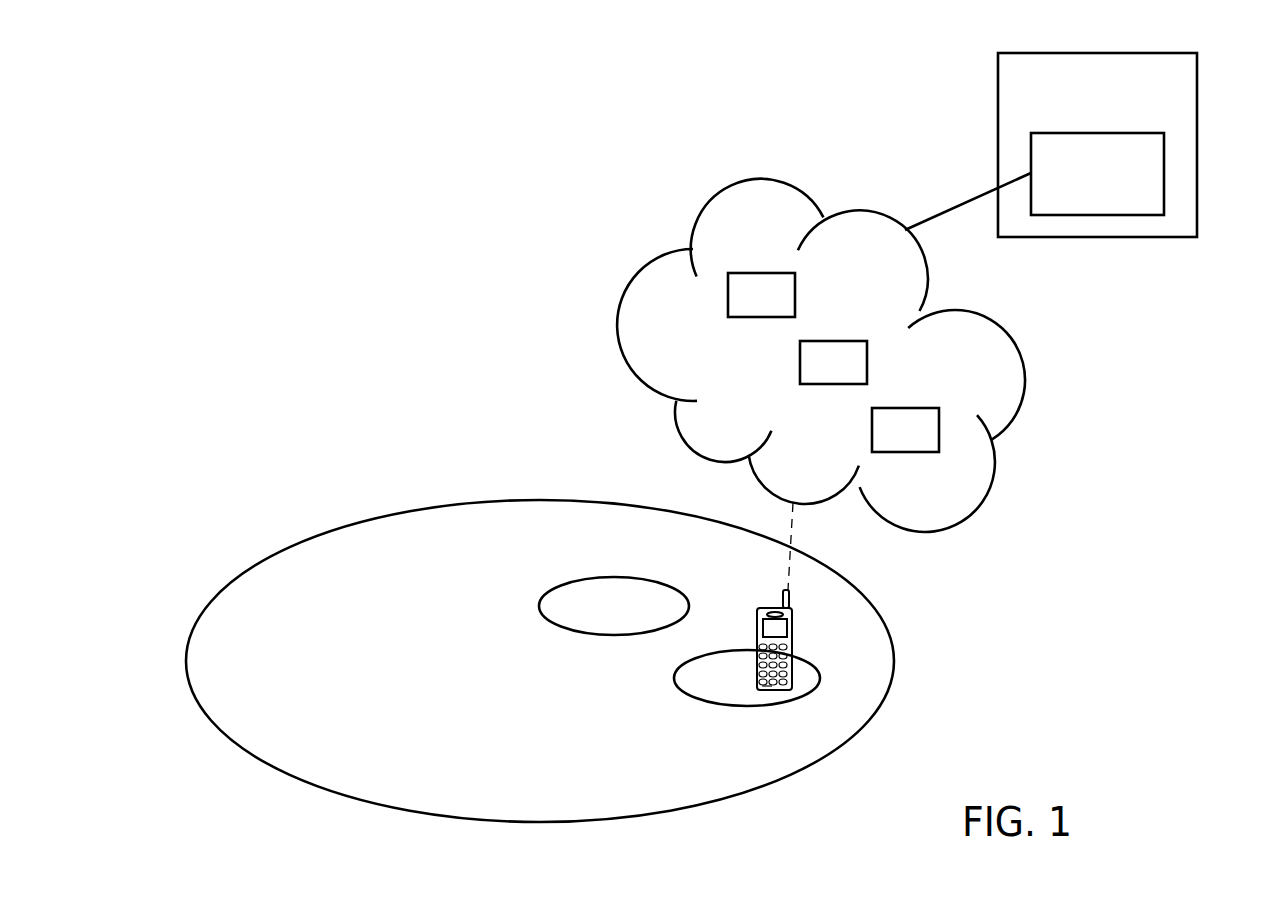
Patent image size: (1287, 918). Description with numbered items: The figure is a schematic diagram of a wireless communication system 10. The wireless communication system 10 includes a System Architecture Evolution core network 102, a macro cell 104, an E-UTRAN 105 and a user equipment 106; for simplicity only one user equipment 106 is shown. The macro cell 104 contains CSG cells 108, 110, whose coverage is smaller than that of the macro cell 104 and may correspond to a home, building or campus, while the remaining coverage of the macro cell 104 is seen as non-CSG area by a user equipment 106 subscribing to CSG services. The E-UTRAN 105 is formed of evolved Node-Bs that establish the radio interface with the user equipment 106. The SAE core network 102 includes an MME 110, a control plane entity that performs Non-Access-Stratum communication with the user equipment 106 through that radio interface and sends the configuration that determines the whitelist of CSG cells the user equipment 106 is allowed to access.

The wireless communication system 10 is at (451, 132).
The SAE core network 102 is at (998, 94).
The macro cell 104 is at (895, 658).
The E-UTRAN 105 is at (618, 325).
The user equipment 106 is at (782, 628).
The CSG cell 108 is at (820, 678).
The CSG cell / MME 110 is at (1164, 173).